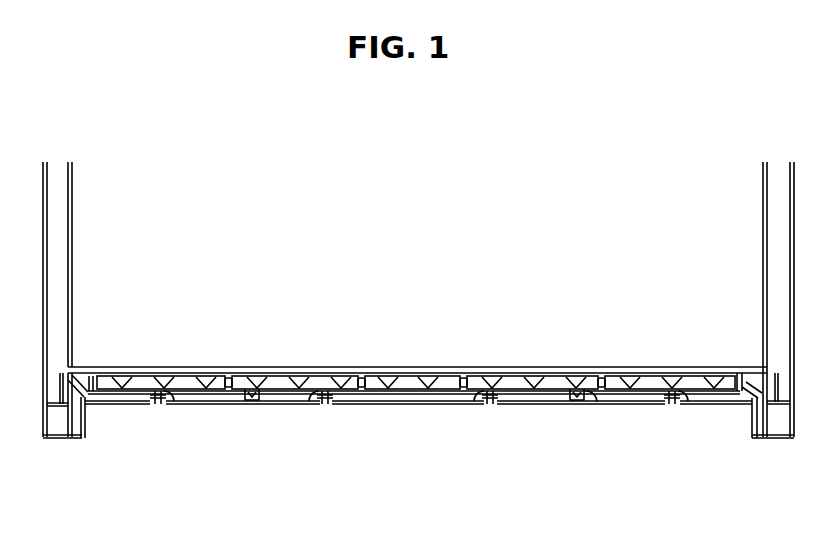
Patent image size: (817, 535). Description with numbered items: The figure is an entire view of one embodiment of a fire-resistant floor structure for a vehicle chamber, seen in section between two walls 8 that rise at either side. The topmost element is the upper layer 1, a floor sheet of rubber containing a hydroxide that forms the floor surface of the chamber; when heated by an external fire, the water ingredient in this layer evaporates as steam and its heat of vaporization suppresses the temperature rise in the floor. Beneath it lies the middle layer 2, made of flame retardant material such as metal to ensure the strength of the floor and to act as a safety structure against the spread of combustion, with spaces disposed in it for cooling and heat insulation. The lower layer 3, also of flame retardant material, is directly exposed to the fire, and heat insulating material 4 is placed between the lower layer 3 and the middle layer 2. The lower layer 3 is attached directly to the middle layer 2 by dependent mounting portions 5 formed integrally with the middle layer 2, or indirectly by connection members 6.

The upper layer 1 is at (263, 367).
The middle layer 2 is at (429, 378).
The lower layer 3 is at (126, 405).
The heat insulating material 4 is at (368, 402).
The dependent mounting portions 5 is at (171, 405).
The connection members 6 is at (253, 401).
The wall 8 is at (73, 224).